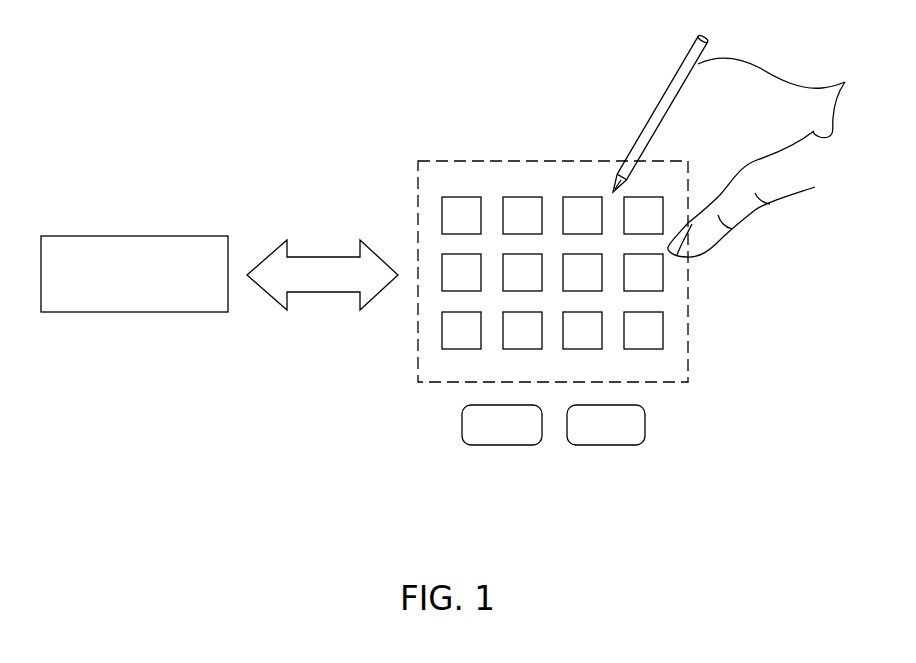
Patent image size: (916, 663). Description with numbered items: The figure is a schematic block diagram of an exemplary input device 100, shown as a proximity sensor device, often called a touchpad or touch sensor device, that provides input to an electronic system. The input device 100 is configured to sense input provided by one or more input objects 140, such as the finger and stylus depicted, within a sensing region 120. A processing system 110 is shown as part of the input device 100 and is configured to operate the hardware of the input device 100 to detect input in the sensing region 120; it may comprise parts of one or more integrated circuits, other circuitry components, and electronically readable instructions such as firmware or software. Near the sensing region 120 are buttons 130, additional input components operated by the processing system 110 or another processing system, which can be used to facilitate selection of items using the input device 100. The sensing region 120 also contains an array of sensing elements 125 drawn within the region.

The input device 100 is at (236, 78).
The processing system 110 is at (113, 236).
The sensing region 120 is at (688, 323).
The sensor electrodes 125 is at (522, 197).
The buttons 130 is at (462, 423).
The input objects 140 is at (753, 145).